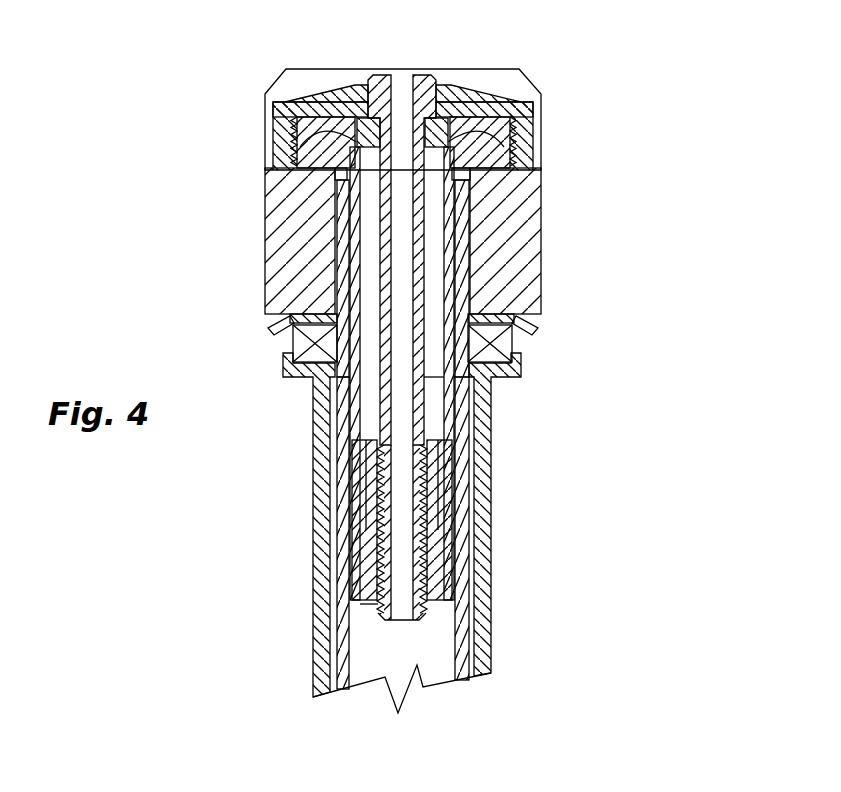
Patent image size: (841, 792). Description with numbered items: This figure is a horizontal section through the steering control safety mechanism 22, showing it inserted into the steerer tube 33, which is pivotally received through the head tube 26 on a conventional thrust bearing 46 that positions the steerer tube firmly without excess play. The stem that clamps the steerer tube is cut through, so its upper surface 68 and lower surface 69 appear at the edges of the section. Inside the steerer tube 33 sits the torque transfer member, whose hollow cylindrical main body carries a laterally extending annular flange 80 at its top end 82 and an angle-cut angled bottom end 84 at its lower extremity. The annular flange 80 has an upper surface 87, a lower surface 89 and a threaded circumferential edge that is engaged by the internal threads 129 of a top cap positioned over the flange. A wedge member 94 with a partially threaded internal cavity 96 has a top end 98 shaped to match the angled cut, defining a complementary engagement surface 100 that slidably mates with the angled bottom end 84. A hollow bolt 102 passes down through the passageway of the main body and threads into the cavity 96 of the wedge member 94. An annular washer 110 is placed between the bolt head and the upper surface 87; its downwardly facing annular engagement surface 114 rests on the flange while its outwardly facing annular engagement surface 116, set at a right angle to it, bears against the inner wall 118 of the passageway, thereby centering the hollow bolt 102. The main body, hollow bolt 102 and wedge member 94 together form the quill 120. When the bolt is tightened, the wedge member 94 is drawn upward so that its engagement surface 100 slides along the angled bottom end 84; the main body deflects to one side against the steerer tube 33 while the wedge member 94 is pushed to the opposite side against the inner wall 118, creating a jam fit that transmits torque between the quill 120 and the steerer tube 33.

The safety mechanism 22 is at (616, 130).
The head tube 26 is at (493, 470).
The steerer tube 33 is at (463, 527).
The thrust bearing 46 is at (513, 343).
The upper surface 68 is at (320, 175).
The lower surface 69 is at (313, 317).
The annular flange 80 is at (483, 135).
The top end 82 is at (458, 192).
The angled bottom end 84 is at (350, 517).
The upper surface 87 is at (470, 140).
The lower surface 89 is at (293, 135).
The wedge member 94 is at (442, 602).
The partially threaded internal cavity 96 is at (437, 578).
The top end 98 is at (450, 448).
The complementary engagement surface 100 is at (375, 558).
The hollow bolt 102 is at (422, 415).
The annular washer 110 is at (465, 133).
The downwardly facing annular engagement surface 114 is at (346, 140).
The outwardly facing annular engagement surface 116 is at (330, 125).
The inner wall 118 is at (430, 383).
The quill 120 is at (365, 606).
The internal threads 129 is at (505, 110).